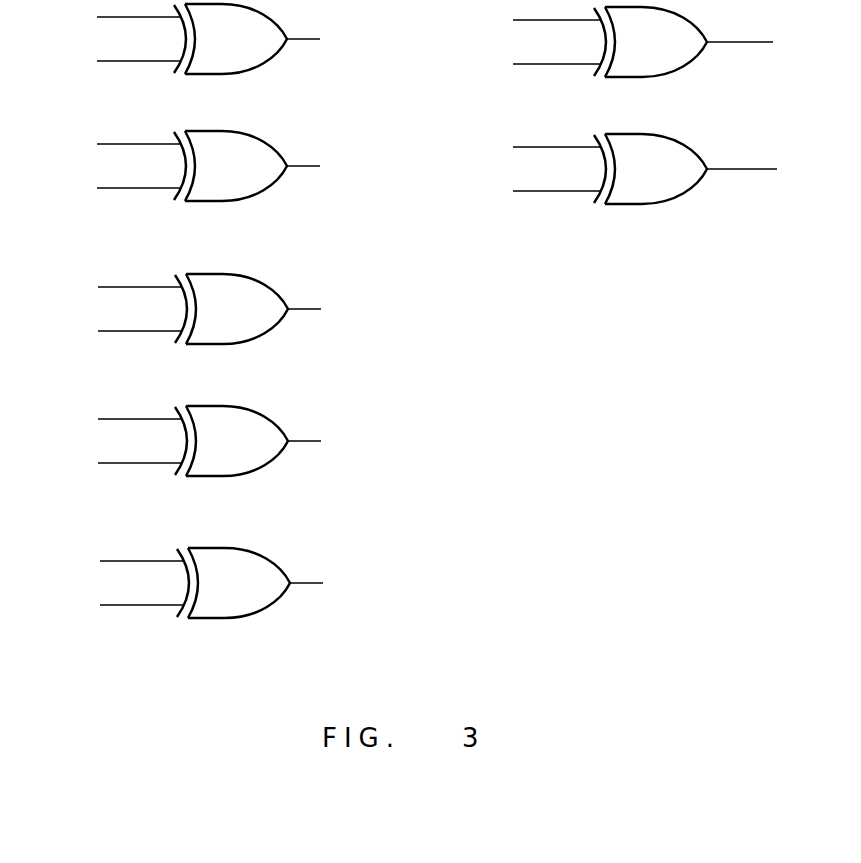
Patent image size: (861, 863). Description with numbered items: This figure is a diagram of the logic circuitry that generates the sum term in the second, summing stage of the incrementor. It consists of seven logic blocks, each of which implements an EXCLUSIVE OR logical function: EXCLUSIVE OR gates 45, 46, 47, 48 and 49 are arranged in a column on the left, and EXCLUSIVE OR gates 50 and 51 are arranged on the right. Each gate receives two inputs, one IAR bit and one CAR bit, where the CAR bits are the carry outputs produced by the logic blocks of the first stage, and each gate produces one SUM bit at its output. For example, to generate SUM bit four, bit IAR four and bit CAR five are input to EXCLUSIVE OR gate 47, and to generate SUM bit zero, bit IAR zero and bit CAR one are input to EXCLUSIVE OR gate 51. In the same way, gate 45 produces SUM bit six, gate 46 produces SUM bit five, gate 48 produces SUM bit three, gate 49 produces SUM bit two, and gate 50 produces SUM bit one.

The EXCLUSIVE OR gate 45 is at (222, 39).
The EXCLUSIVE OR gate 46 is at (222, 166).
The EXCLUSIVE OR gate 47 is at (223, 309).
The EXCLUSIVE OR gate 48 is at (223, 441).
The EXCLUSIVE OR gate 49 is at (225, 583).
The EXCLUSIVE OR gate 50 is at (624, 42).
The EXCLUSIVE OR gate 51 is at (624, 169).